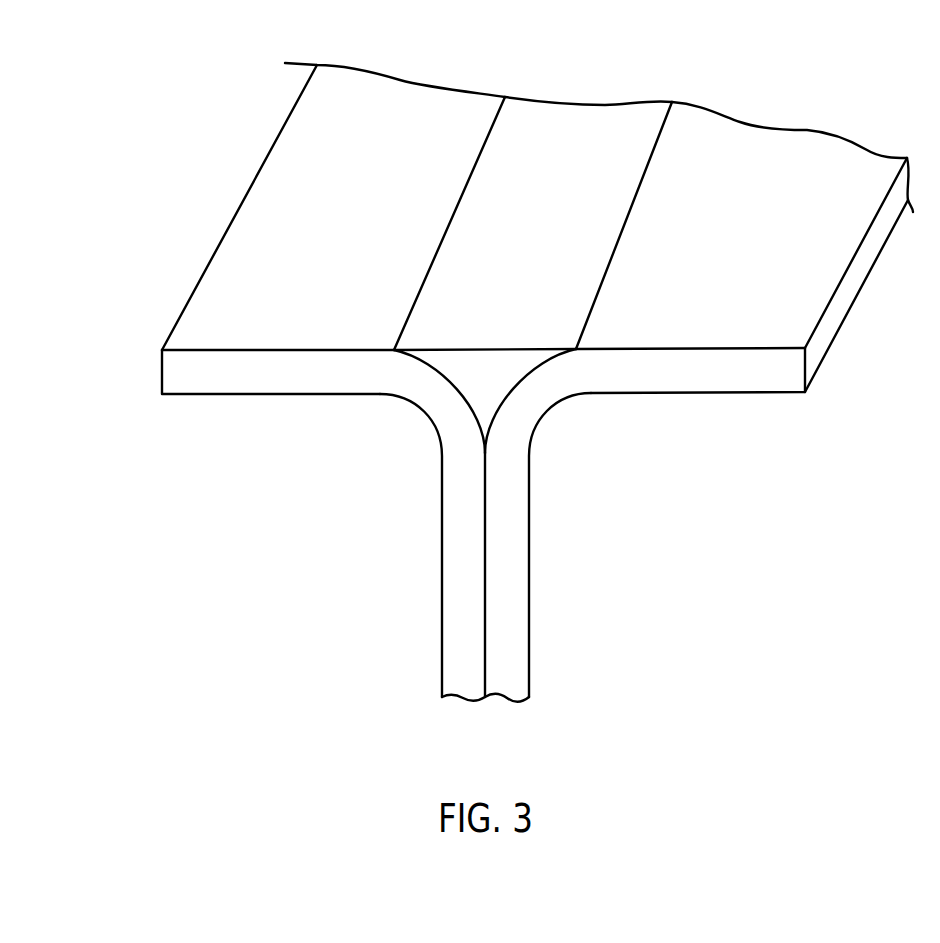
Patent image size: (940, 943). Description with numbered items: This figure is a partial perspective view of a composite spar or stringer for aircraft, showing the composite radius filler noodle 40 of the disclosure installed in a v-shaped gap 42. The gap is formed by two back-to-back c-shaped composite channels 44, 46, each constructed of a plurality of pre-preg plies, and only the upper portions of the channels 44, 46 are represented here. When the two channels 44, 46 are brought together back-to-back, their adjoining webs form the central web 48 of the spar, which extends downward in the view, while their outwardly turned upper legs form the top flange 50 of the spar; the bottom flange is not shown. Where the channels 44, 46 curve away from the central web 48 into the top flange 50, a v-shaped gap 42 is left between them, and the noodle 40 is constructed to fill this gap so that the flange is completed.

The composite radius filler noodle 40 is at (574, 123).
The v-shaped gap 42 is at (480, 377).
The c-shaped composite channel 44 is at (442, 557).
The c-shaped composite channel 46 is at (530, 548).
The central web 48 is at (538, 638).
The top flange 50 is at (268, 212).